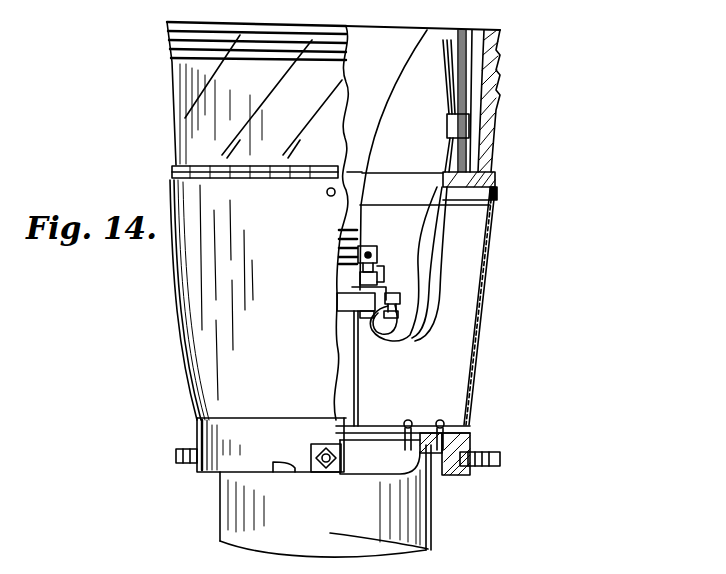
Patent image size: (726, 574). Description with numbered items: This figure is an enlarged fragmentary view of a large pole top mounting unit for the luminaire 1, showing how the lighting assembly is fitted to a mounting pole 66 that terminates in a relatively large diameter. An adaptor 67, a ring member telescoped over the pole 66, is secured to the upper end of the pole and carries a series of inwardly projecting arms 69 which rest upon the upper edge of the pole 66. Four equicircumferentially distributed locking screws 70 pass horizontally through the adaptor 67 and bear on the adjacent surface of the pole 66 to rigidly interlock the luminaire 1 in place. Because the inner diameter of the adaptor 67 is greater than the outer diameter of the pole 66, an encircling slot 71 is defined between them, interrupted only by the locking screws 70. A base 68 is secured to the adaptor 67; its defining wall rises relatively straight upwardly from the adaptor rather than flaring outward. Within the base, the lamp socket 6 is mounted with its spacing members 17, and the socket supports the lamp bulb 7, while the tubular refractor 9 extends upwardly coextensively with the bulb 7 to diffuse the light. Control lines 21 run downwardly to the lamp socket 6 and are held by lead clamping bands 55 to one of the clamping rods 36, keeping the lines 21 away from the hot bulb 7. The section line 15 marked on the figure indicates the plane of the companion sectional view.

The luminaire 1 is at (516, 162).
The lamp socket 6 is at (358, 247).
The lamp bulb 7 is at (358, 118).
The tubular refractor 9 is at (488, 130).
The section line 15 is at (188, 390).
The spacing members 17 is at (355, 388).
The control lines 21 is at (446, 75).
The clamping rod 36 is at (462, 86).
The lead clamping bands 55 is at (447, 126).
The mounting pole 66 is at (432, 522).
The adaptor 67 is at (286, 452).
The base 68 is at (482, 320).
The inwardly projecting arms 69 is at (408, 440).
The locking screws 70 is at (176, 456).
The encircling slot 71 is at (460, 442).